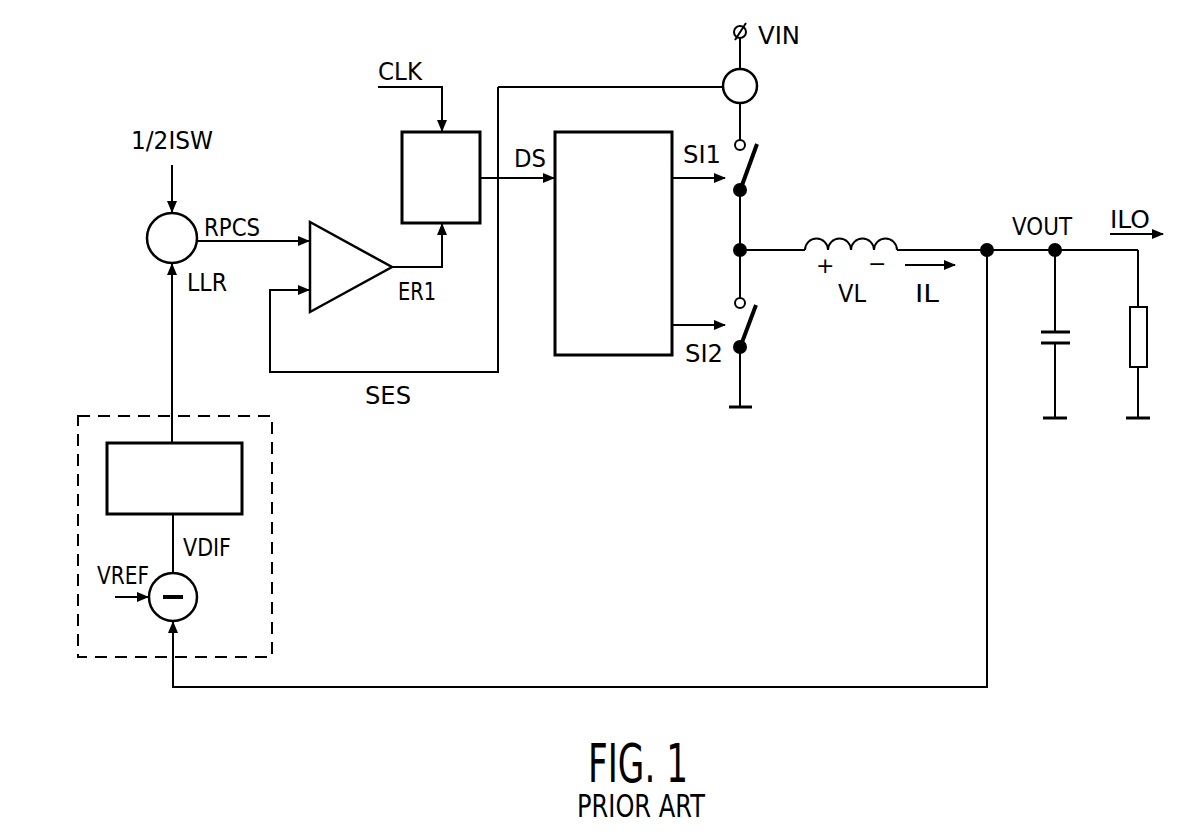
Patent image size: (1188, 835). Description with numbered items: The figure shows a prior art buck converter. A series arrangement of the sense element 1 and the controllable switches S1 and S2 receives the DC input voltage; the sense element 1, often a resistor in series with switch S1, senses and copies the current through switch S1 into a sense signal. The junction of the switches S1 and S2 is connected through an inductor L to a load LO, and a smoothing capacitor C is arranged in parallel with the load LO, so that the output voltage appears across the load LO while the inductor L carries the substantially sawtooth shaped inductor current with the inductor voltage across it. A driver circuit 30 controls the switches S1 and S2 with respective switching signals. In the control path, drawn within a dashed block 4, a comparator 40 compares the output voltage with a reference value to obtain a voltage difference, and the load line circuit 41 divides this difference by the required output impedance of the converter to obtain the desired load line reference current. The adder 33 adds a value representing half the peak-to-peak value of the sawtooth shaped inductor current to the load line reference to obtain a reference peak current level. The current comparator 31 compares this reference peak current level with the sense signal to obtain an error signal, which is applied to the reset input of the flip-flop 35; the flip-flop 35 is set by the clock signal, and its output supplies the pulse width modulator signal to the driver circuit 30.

The sense element 1 is at (758, 88).
The load line control block 4 is at (116, 412).
The driver circuit 30 is at (645, 356).
The current comparator 31 is at (343, 244).
The adder 33 is at (147, 240).
The flip-flop 35 is at (470, 131).
The comparator 40 is at (197, 600).
The load line circuit 41 is at (242, 480).
The controllable switch S1 is at (752, 160).
The controllable switch S2 is at (750, 324).
The inductor L is at (866, 240).
The smoothing capacitor C is at (1040, 342).
The load LO is at (1130, 338).